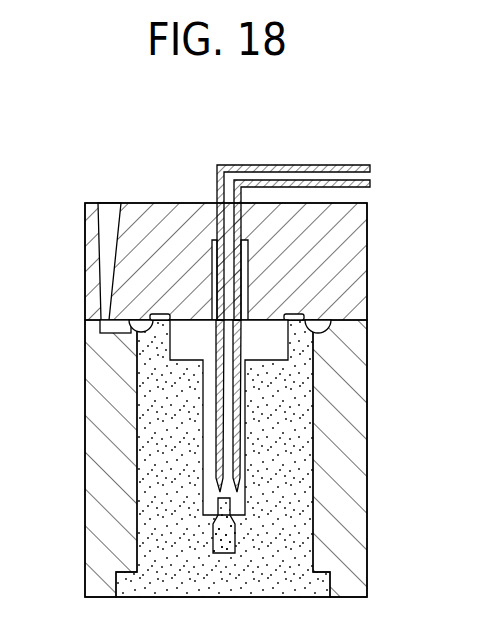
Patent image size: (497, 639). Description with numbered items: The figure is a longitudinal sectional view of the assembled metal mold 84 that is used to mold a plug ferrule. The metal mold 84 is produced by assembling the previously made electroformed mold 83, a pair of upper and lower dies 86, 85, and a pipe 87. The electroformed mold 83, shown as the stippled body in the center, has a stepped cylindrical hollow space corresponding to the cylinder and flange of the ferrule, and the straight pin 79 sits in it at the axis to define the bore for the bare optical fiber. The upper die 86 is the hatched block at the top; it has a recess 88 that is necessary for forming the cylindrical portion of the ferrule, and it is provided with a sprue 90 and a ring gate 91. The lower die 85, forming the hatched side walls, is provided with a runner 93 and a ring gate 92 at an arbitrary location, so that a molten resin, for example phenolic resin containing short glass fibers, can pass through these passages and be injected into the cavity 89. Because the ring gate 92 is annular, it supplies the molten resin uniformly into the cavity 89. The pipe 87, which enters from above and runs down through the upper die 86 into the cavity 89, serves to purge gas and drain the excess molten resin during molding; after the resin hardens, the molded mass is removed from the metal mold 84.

The straight pin 79 is at (232, 540).
The electroformed mold 83 is at (300, 478).
The sample holder assembly 84 is at (372, 533).
The lower die 85 is at (338, 411).
The upper die 86 is at (345, 253).
The pipe 87 is at (340, 165).
The recess 88 is at (212, 248).
The cavity 89 is at (214, 412).
The sprue 90 is at (106, 236).
The ring gate 91 is at (159, 314).
The ring gate 92 is at (145, 333).
The runner 93 is at (100, 326).